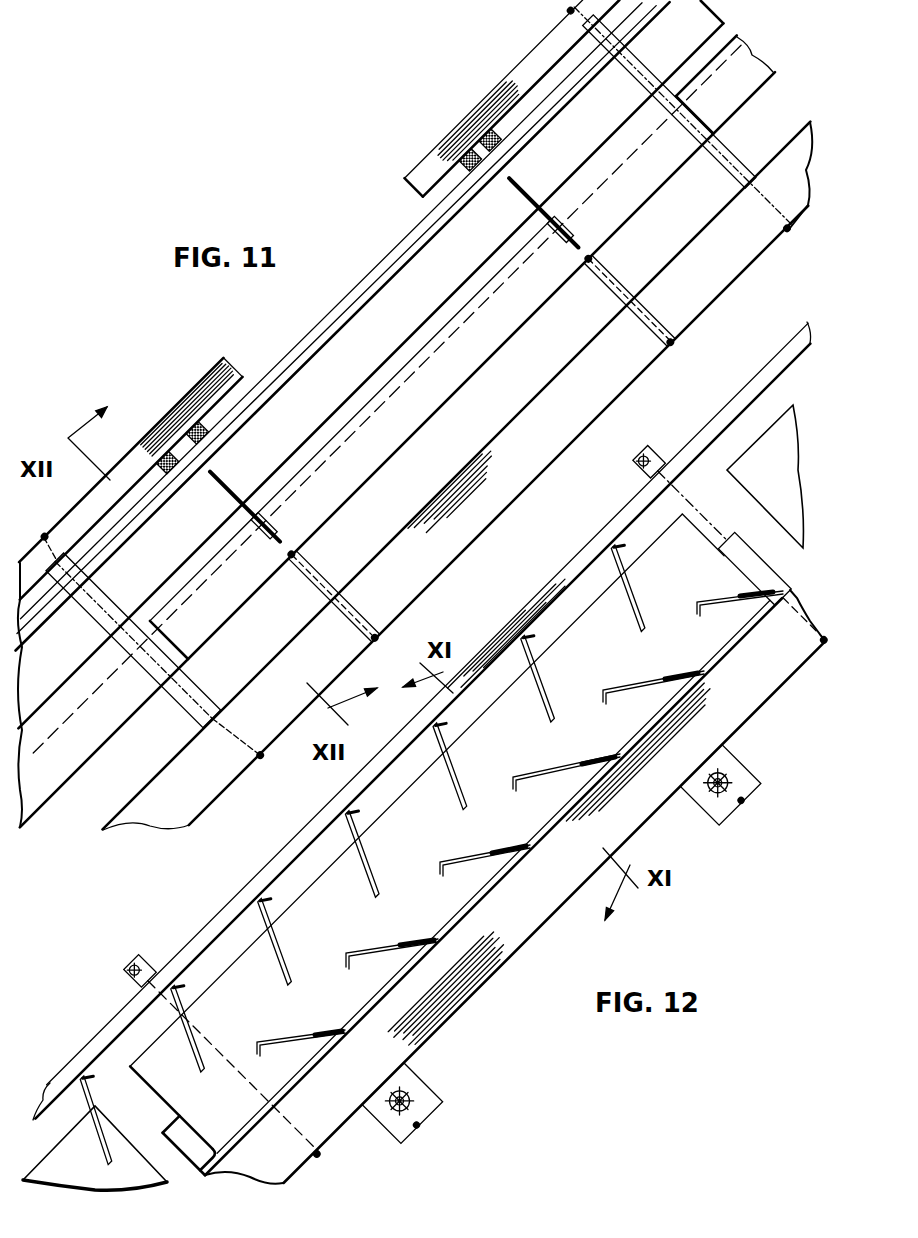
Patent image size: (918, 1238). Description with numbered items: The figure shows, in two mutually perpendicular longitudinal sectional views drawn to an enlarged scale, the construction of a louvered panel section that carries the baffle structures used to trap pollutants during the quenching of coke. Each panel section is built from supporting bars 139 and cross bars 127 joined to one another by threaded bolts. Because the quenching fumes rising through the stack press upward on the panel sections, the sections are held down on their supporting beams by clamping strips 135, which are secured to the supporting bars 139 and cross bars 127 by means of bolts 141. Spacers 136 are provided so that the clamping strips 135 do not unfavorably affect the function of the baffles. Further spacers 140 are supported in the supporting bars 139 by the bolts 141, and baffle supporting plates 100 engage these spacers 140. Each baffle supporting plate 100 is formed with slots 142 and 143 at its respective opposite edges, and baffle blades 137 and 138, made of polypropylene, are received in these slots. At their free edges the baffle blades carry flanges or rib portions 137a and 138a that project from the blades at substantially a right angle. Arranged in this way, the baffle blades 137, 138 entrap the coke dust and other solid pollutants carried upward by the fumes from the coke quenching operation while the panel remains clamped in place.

In FIG. 11, the baffle supporting plate 100 is at (519, 197).
In FIG. 12, the baffle supporting plate 100 is at (408, 1048).
In FIG. 11, the cross bar 127 is at (417, 608).
In FIG. 12, the cross bar 127 is at (715, 818).
In FIG. 11, the clamping strip 135 is at (510, 84).
In FIG. 12, the clamping strip 135 is at (640, 468).
In FIG. 11, the spacer 136 is at (480, 138).
In FIG. 12, the spacer 136 is at (553, 583).
In FIG. 11, the baffle blade 137 is at (380, 317).
In FIG. 12, the baffle blade 137 is at (478, 777).
In FIG. 11, the flange or rib portion 137a is at (325, 342).
In FIG. 12, the flange or rib portion 137a is at (450, 738).
In FIG. 11, the baffle blade 138 is at (356, 470).
In FIG. 12, the baffle blade 138 is at (450, 868).
In FIG. 11, the flange or rib portion 138a is at (313, 475).
In FIG. 12, the flange or rib portion 138a is at (338, 955).
In FIG. 11, the supporting bar 139 is at (283, 612).
In FIG. 12, the supporting bar 139 is at (512, 952).
In FIG. 11, the spacer 140 is at (717, 156).
In FIG. 12, the spacer 140 is at (762, 562).
In FIG. 11, the bolt 141 is at (200, 690).
In FIG. 12, the bolt 141 is at (730, 472).
In FIG. 11, the slot 142 is at (560, 220).
In FIG. 12, the slot 142 is at (627, 617).
In FIG. 12, the slot 143 is at (612, 719).